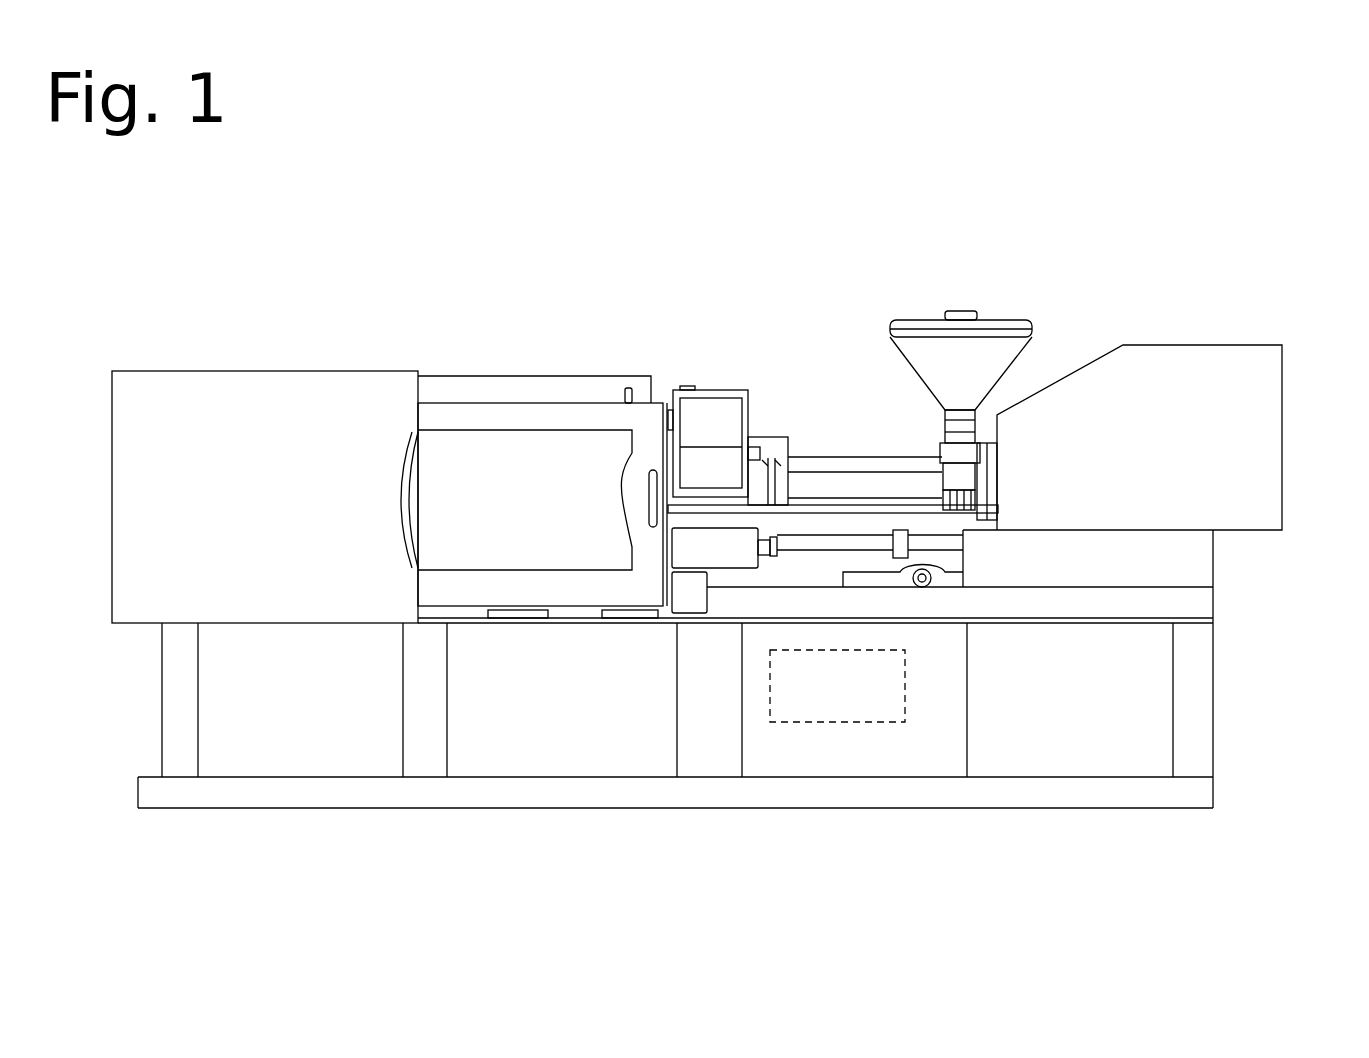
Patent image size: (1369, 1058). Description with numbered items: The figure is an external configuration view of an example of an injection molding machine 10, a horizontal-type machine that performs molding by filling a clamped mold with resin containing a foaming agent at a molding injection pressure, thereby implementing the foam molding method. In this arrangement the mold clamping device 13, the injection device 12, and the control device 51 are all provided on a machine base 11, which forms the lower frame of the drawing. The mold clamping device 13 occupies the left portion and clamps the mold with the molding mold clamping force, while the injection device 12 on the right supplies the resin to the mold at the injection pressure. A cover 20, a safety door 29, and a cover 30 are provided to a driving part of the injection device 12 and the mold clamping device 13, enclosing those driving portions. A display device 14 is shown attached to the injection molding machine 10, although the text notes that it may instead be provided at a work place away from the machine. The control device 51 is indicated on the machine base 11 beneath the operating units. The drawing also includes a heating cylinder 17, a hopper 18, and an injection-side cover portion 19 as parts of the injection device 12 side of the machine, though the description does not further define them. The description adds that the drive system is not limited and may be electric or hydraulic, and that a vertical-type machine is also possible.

The injection molding machine 10 is at (801, 288).
The machine base 11 is at (1200, 690).
The injection device 12 is at (1078, 350).
The mold clamping device 13 is at (515, 352).
The display device 14 is at (724, 408).
The heating cylinder 17 is at (868, 462).
The hopper 18 is at (1005, 320).
The injection unit cover 19 is at (1228, 440).
The cover 20 is at (1208, 357).
The safety door 29 is at (460, 384).
The cover 30 is at (268, 385).
The control device 51 is at (832, 705).